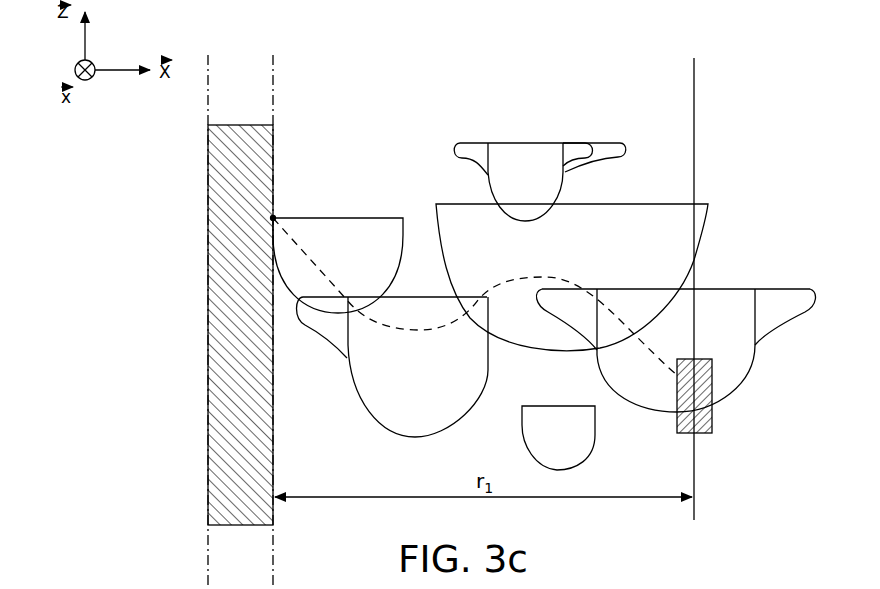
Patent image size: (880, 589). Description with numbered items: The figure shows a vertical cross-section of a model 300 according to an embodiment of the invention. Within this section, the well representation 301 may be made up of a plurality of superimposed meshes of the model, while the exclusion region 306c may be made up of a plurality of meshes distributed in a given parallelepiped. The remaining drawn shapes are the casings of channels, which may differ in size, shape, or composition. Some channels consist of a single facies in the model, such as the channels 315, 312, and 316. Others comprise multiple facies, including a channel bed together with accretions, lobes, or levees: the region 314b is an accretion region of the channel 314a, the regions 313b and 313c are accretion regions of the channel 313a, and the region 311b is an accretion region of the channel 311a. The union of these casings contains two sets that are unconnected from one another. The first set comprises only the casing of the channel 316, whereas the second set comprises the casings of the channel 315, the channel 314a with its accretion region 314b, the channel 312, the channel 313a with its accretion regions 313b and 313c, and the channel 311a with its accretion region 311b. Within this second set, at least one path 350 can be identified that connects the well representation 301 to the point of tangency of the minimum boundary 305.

The model 300 is at (622, 55).
The well representation 301 is at (705, 423).
The minimum boundary 305 is at (273, 218).
The exclusion region 306c is at (232, 330).
The channel 311a is at (716, 312).
The accretion region 311b is at (782, 312).
The channel 312 is at (676, 222).
The channel 313a is at (500, 172).
The accretion region 313b is at (578, 150).
The accretion region 313c is at (600, 147).
The channel 314a is at (405, 410).
The accretion region 314b is at (325, 322).
The channel 315 is at (365, 222).
The channel 316 is at (560, 452).
The path 350 is at (433, 332).